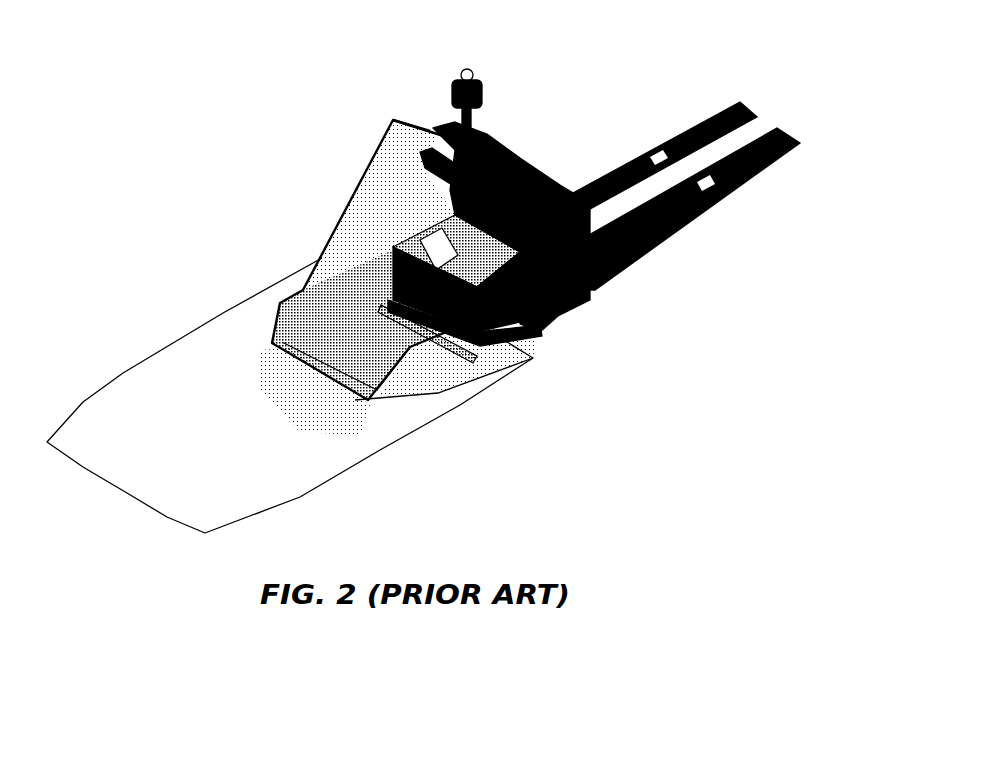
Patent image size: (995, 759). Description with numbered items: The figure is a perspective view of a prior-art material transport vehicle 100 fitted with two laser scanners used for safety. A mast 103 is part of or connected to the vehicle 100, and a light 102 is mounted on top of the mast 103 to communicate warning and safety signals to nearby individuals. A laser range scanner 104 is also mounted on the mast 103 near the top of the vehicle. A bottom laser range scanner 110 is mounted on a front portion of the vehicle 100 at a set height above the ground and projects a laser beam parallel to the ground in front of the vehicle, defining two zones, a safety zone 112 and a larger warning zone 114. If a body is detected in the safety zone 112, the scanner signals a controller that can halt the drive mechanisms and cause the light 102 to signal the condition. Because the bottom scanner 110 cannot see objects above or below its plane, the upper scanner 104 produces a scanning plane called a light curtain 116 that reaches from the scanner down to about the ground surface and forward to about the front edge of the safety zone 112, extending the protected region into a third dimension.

The material transport vehicle 100 is at (594, 196).
The light 102 is at (474, 71).
The mast 103 is at (482, 141).
The laser range scanner 104 is at (417, 142).
The bottom laser range scanner 110 is at (377, 302).
The safety zone 112 is at (438, 373).
The warning zone 114 is at (154, 424).
The light curtain 116 is at (356, 217).